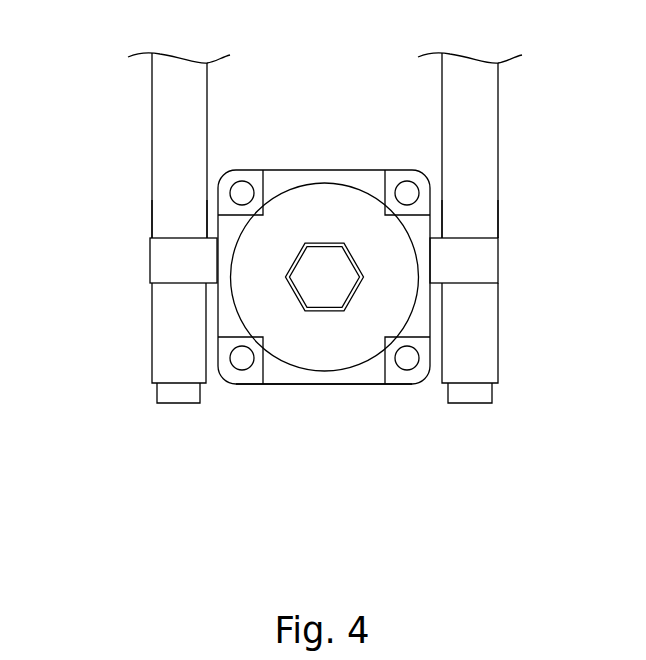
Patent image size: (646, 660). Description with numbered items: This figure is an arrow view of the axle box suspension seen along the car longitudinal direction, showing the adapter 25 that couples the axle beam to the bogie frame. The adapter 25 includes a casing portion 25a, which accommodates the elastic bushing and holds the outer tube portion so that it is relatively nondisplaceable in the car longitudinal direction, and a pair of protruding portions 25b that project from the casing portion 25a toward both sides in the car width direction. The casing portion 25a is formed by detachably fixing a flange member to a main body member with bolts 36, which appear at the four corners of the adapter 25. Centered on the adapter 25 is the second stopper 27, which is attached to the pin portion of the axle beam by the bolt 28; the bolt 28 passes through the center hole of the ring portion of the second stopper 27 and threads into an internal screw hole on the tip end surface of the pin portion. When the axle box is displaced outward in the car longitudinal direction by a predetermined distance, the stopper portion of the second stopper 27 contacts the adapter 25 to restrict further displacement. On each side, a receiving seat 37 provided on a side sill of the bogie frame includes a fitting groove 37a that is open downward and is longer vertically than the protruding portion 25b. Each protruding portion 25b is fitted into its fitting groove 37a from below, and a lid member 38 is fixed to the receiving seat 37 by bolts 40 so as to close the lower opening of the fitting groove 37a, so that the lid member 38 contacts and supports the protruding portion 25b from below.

The adapter 25 is at (360, 170).
The casing portion 25a is at (353, 384).
The protruding portion 25b is at (160, 262).
The second stopper 27 is at (322, 200).
The bolt 28 is at (324, 280).
The bolt 36 is at (242, 193).
The receiving seat 37 is at (152, 125).
The fitting groove 37a is at (182, 235).
The lid member 38 is at (152, 355).
The bolt 40 is at (165, 405).